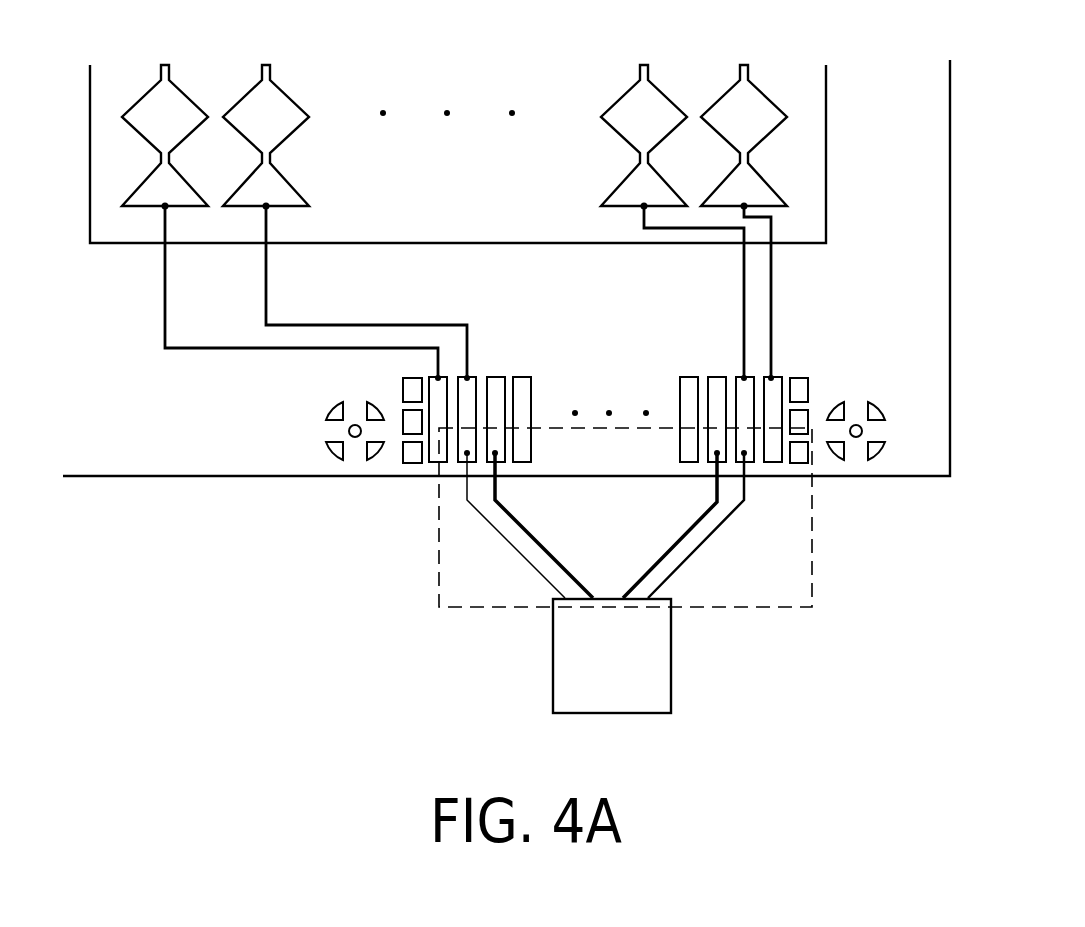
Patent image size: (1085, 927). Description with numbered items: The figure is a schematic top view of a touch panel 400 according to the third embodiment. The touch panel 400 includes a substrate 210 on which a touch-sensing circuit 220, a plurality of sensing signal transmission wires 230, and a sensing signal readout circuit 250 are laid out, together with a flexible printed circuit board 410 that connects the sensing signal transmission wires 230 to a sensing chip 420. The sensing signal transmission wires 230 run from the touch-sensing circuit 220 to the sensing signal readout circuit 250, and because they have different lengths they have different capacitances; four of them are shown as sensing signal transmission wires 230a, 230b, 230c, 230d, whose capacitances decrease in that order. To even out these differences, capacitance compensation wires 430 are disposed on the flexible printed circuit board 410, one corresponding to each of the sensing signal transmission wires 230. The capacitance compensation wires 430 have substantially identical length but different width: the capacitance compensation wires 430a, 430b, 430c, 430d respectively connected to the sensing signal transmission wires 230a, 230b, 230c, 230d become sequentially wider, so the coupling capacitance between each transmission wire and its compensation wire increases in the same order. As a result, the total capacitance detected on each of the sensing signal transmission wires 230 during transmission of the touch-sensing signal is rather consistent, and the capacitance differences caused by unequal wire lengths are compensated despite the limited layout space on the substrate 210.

The substrate 210 is at (950, 272).
The touch-sensing circuit 220 is at (832, 148).
The sensing signal transmission wires 230 is at (233, 352).
The sensing signal transmission wire 230a is at (177, 100).
The sensing signal transmission wire 230b is at (277, 100).
The sensing signal transmission wire 230c is at (655, 100).
The sensing signal transmission wire 230d is at (755, 100).
The sensing signal readout circuit 250 is at (775, 390).
The touch panel 400 is at (870, 737).
The flexible printed circuit board 410 is at (812, 575).
The sensing chip 420 is at (671, 658).
The capacitance compensation wires 430 is at (626, 524).
The capacitance compensation wire 430a is at (467, 497).
The capacitance compensation wire 430b is at (548, 555).
The capacitance compensation wire 430c is at (692, 525).
The capacitance compensation wire 430d is at (747, 483).